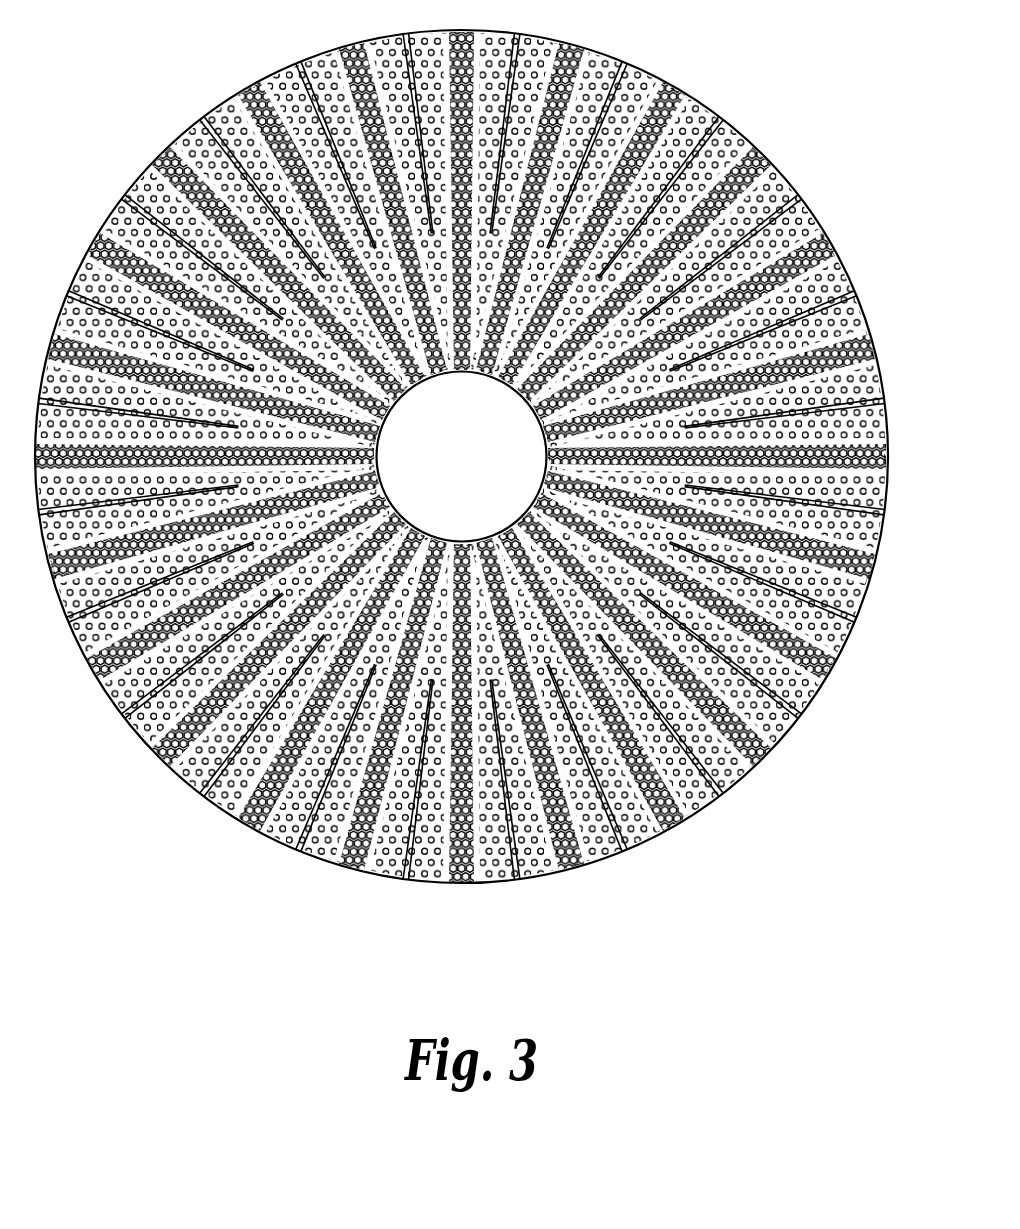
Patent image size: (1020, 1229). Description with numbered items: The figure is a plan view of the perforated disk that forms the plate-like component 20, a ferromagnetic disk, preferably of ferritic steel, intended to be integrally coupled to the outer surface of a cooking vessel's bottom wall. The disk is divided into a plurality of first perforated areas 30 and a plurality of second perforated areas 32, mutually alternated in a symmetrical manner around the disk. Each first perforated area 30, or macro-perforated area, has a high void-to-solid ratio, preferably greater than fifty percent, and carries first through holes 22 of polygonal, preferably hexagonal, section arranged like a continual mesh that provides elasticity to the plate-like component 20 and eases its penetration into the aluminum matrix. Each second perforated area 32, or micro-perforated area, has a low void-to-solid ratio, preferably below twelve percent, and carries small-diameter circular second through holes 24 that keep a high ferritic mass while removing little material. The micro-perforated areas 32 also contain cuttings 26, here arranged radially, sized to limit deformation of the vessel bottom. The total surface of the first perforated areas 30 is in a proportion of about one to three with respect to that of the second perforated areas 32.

The plate-like component 20 is at (461, 497).
The first through holes 22 is at (480, 884).
The second through holes 24 is at (538, 858).
The cuttings 26 is at (626, 852).
The first perforated areas 30 is at (770, 156).
The second perforated areas 32 is at (755, 136).